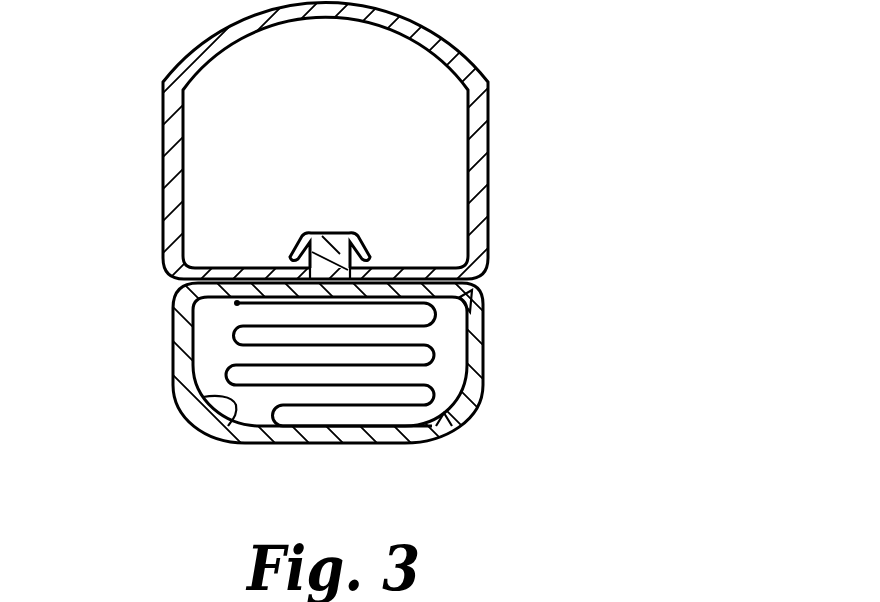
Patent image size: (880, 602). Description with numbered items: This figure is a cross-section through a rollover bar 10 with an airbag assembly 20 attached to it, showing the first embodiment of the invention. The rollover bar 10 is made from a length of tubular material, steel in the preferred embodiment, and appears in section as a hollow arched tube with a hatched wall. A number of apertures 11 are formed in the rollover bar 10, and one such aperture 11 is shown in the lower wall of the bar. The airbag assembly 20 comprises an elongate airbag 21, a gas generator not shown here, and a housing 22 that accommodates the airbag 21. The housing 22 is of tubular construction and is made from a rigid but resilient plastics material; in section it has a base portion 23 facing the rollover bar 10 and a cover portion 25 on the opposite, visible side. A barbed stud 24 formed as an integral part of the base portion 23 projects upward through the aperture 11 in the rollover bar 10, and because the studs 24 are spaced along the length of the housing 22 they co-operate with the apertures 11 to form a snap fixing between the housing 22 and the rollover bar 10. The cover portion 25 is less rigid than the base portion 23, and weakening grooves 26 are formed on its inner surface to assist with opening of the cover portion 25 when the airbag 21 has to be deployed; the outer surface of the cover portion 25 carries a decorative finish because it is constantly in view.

The rollover bar 10 is at (170, 133).
The aperture 11 is at (334, 262).
The airbag assembly 20 is at (491, 328).
The airbag 21 is at (408, 356).
The housing 22 is at (183, 340).
The base portion 23 is at (214, 280).
The barbed stud 24 is at (338, 242).
The cover portion 25 is at (280, 438).
The weakening groove 26 is at (474, 296).